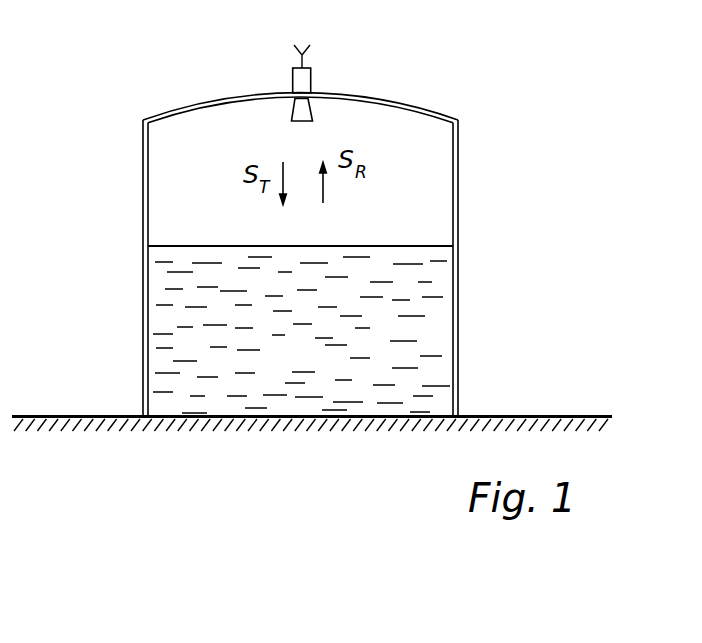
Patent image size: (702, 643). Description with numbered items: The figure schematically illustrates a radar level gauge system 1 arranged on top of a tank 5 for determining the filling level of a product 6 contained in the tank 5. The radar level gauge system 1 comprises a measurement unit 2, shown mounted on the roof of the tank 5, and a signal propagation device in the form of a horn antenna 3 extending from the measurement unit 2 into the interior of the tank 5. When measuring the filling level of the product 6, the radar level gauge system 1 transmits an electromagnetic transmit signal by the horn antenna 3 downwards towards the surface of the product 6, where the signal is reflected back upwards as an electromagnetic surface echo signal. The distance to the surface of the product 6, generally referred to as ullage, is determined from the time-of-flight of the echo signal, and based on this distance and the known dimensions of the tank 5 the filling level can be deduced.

The radar level gauge system 1 is at (337, 72).
The measurement unit 2 is at (293, 80).
The horn antenna 3 is at (292, 106).
The tank 5 is at (459, 185).
The product 6 is at (295, 358).